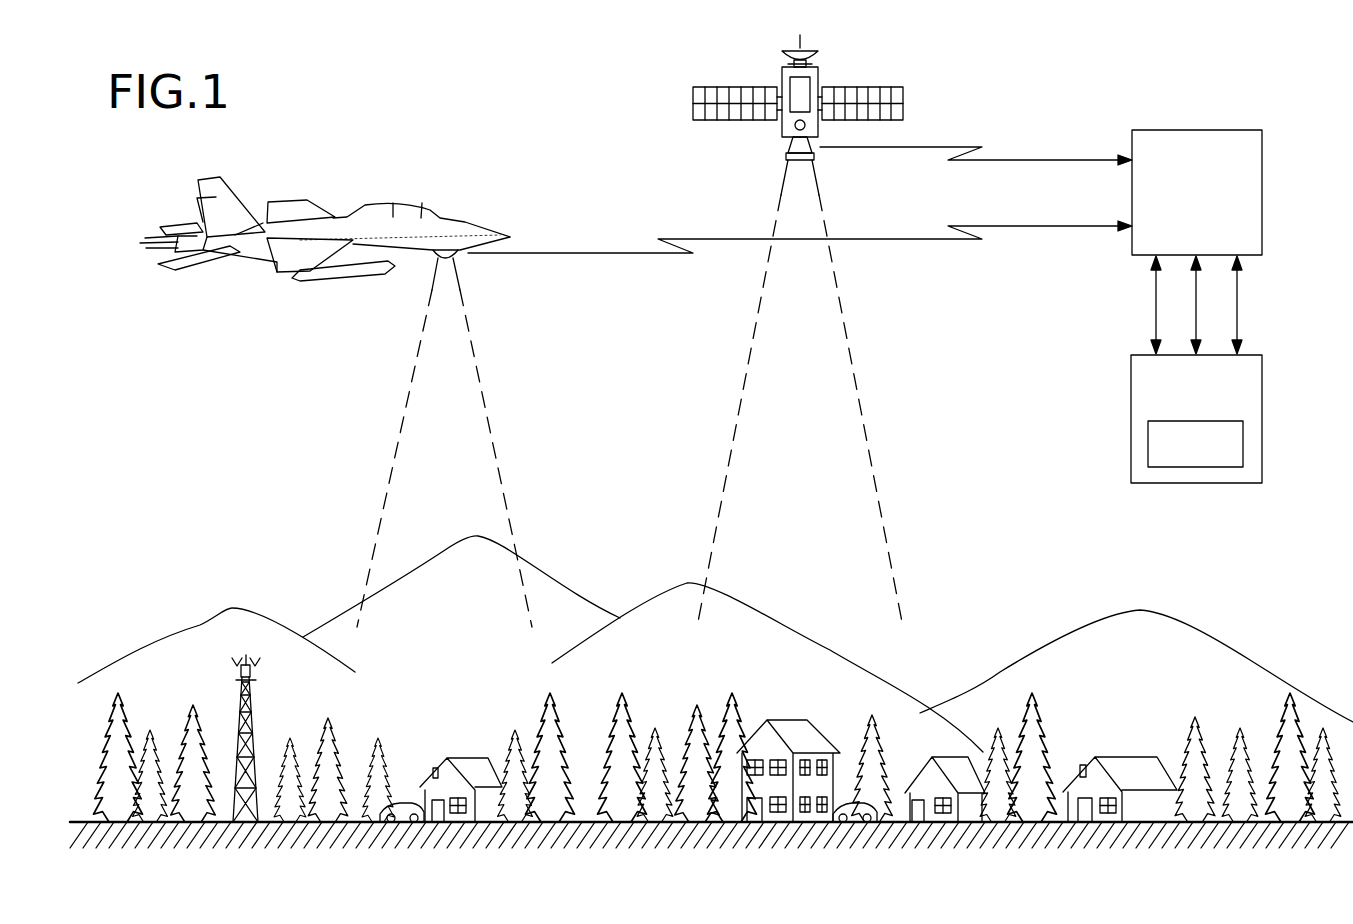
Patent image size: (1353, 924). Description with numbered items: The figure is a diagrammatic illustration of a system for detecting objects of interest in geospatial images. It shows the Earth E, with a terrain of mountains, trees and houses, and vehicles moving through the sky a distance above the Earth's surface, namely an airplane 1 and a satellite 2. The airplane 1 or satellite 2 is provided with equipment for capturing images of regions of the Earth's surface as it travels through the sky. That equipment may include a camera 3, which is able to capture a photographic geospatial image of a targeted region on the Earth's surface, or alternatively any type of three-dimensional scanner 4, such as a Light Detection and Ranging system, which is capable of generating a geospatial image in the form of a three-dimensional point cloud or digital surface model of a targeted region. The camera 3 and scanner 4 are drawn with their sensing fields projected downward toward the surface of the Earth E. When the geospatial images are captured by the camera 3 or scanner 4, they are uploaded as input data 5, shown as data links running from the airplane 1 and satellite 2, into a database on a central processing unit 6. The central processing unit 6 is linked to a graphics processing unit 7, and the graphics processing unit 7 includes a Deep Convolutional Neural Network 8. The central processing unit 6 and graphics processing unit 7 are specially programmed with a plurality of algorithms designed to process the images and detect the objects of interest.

The airplane 1 is at (245, 268).
The satellite 2 is at (712, 80).
The camera 3 is at (437, 250).
The 3D scanner 4 is at (790, 145).
The input data 5 is at (1038, 160).
The central processing unit 6 is at (1194, 120).
The graphics processing unit 7 is at (1126, 384).
The Deep Convolutional Neural Network 8 is at (1148, 441).
The Earth E is at (1193, 614).